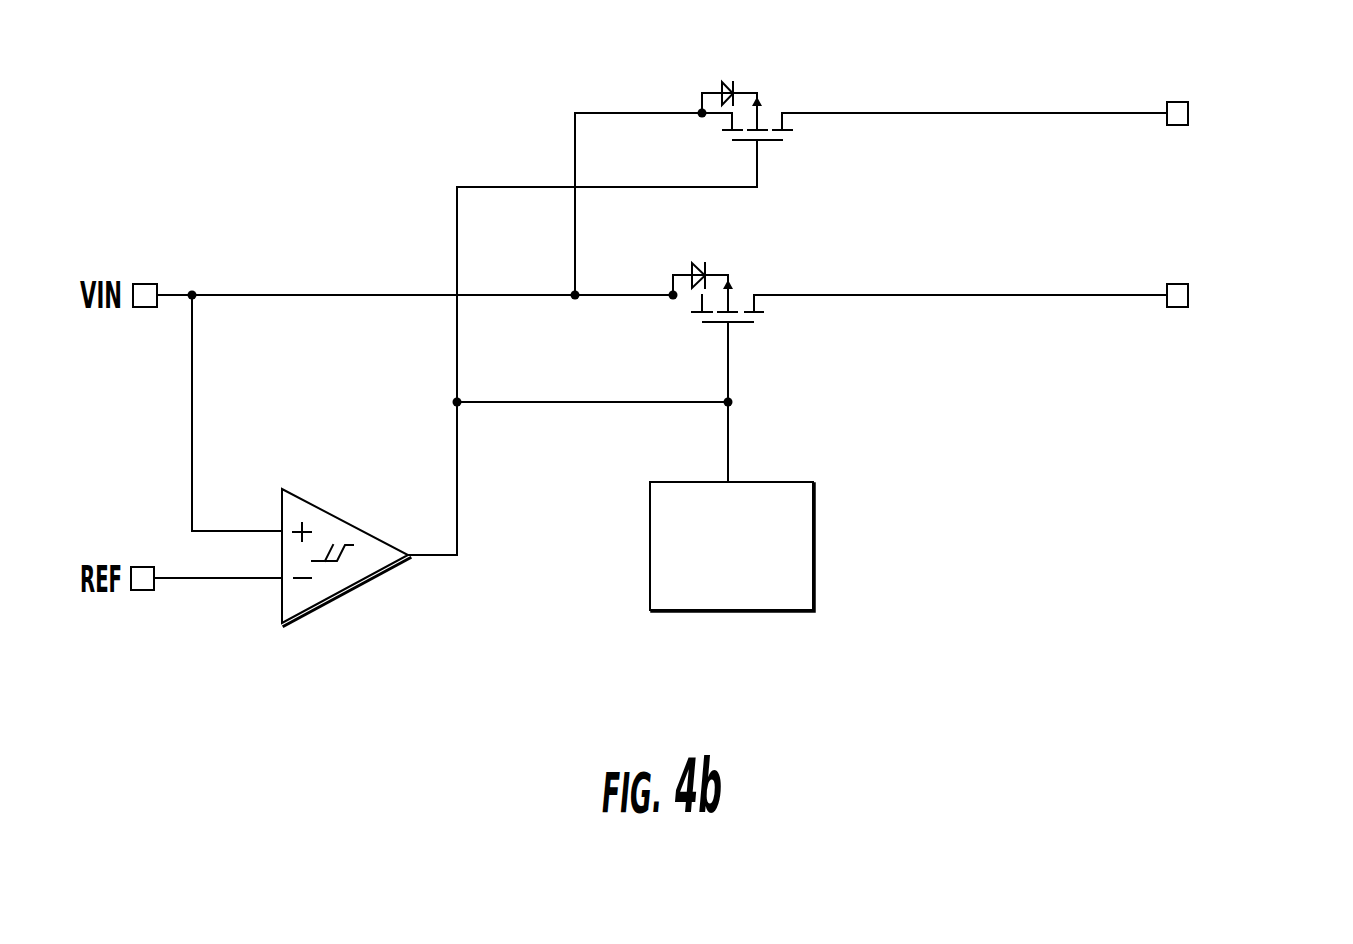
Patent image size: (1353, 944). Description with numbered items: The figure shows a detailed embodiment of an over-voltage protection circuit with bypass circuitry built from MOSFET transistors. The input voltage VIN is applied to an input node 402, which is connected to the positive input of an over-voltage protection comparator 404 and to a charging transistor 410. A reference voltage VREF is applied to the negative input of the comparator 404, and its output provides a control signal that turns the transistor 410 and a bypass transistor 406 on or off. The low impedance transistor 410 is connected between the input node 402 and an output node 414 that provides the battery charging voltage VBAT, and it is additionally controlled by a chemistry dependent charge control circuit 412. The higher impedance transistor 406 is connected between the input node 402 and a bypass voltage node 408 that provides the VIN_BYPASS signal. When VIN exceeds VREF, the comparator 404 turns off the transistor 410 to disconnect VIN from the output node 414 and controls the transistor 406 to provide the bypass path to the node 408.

The input node 402 is at (195, 289).
The over-voltage protection comparator 404 is at (347, 590).
The bypass transistor 406 is at (772, 143).
The bypass voltage node 408 is at (1173, 102).
The charging transistor 410 is at (743, 325).
The charge control circuit 412 is at (792, 612).
The output node 414 is at (1175, 309).